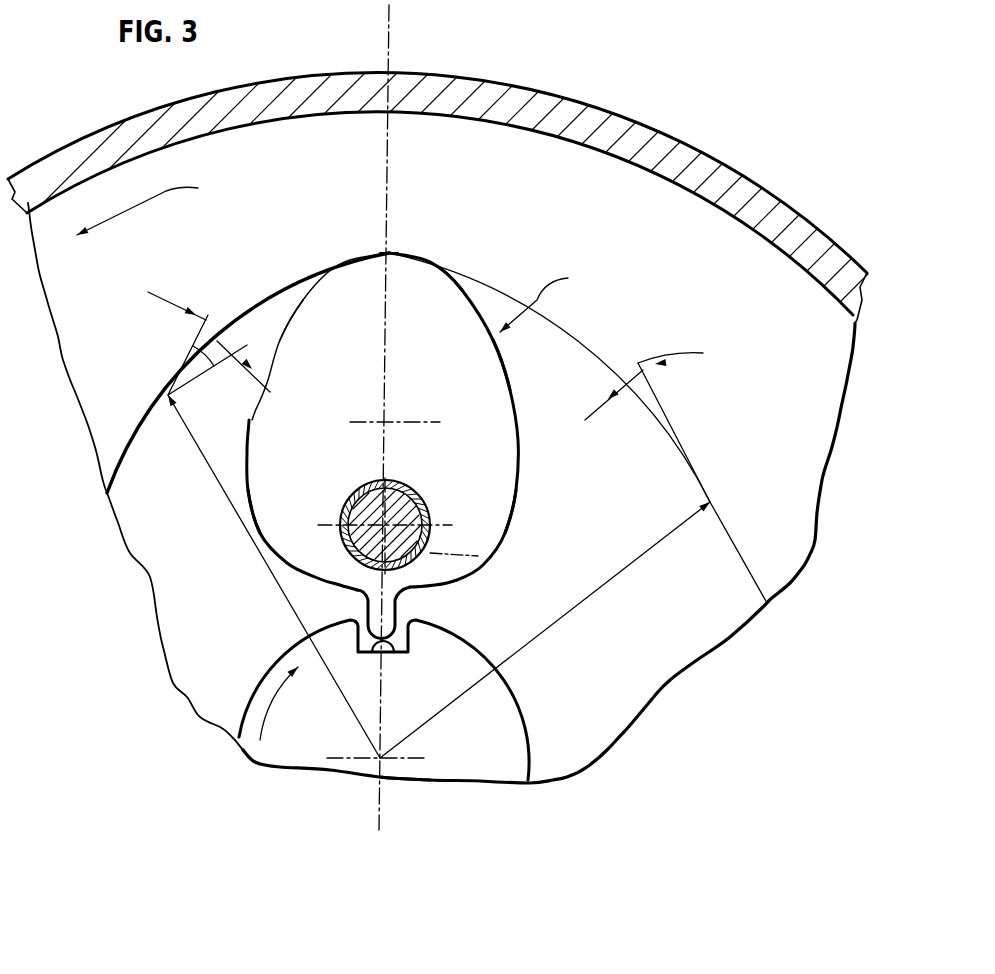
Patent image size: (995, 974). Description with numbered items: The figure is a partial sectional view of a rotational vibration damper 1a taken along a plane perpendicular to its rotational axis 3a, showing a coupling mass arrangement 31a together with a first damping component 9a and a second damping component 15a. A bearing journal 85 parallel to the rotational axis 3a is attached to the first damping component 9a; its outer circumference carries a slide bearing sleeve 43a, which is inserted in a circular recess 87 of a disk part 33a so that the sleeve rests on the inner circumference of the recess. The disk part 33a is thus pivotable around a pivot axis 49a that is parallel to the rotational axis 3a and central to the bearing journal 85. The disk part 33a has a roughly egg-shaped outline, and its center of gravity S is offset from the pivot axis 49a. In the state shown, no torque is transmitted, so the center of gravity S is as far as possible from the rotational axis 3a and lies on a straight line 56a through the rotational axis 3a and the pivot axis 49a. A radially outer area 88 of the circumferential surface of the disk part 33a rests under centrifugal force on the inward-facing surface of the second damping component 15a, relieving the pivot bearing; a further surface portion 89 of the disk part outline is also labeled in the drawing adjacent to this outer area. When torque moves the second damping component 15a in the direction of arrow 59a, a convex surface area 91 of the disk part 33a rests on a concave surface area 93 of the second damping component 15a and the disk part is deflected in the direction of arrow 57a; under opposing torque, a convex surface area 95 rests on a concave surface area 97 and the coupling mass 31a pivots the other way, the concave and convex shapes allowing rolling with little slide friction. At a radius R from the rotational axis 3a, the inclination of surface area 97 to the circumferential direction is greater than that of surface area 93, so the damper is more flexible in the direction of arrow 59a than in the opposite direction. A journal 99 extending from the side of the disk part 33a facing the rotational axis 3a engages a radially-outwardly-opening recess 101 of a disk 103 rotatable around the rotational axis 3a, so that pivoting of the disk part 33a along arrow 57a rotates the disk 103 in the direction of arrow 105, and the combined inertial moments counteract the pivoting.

The rotational vibration damper 1a is at (687, 726).
The rotational axis 3a is at (372, 766).
The first damping component 9a is at (438, 195).
The second damping component 15a is at (565, 180).
The coupling mass arrangement 31a is at (550, 300).
The disk part 33a is at (260, 497).
The slide bearing sleeve 43a is at (395, 511).
The pivot axis 49a is at (483, 560).
The straight line 56a is at (389, 42).
The arrow 57a is at (293, 523).
The arrow 59a is at (156, 207).
The bearing journal 85 is at (408, 493).
The circular recess 87 is at (347, 543).
The radially outer area 88 is at (373, 252).
The right cavity wall portion 89 is at (463, 292).
The surface area 91 is at (518, 422).
The surface area 93 is at (570, 337).
The surface area 95 is at (288, 313).
The surface area 97 is at (292, 282).
The journal 99 is at (392, 612).
The radially-outwardly-opening recess 101 is at (386, 654).
The disk 103 is at (497, 777).
The arrow 105 is at (263, 720).
The radius R is at (280, 593).
The center of gravity S is at (387, 422).